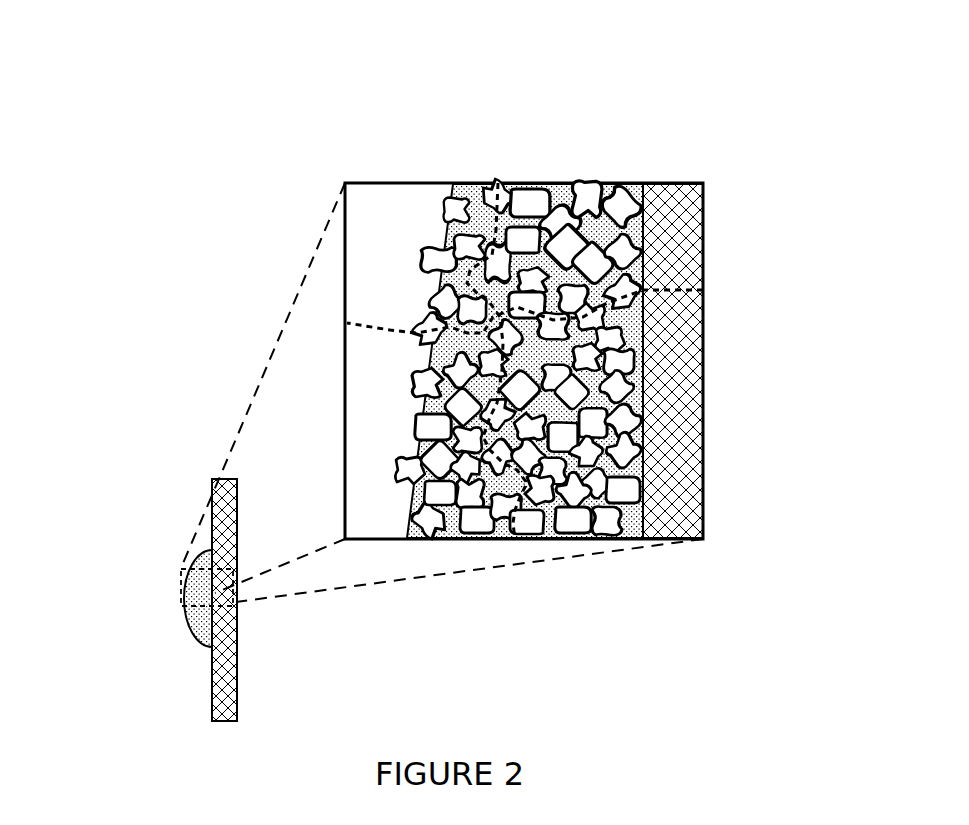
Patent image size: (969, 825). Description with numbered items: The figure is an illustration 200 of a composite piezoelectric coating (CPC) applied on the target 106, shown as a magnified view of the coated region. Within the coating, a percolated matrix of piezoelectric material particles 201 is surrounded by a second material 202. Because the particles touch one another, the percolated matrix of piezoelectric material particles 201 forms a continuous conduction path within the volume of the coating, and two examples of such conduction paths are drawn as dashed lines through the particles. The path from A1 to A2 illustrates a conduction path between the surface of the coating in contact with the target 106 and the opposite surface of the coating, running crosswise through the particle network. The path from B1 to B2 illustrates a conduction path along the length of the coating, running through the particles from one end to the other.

The illustration 200 is at (246, 176).
The piezoelectric material particles 201 is at (553, 230).
The second material 202 is at (629, 247).
The target 106 is at (707, 231).
The path A1 start point A1 is at (703, 291).
The path A2 end point A2 is at (345, 323).
The path B1 start point B1 is at (515, 540).
The path B2 end point B2 is at (499, 183).